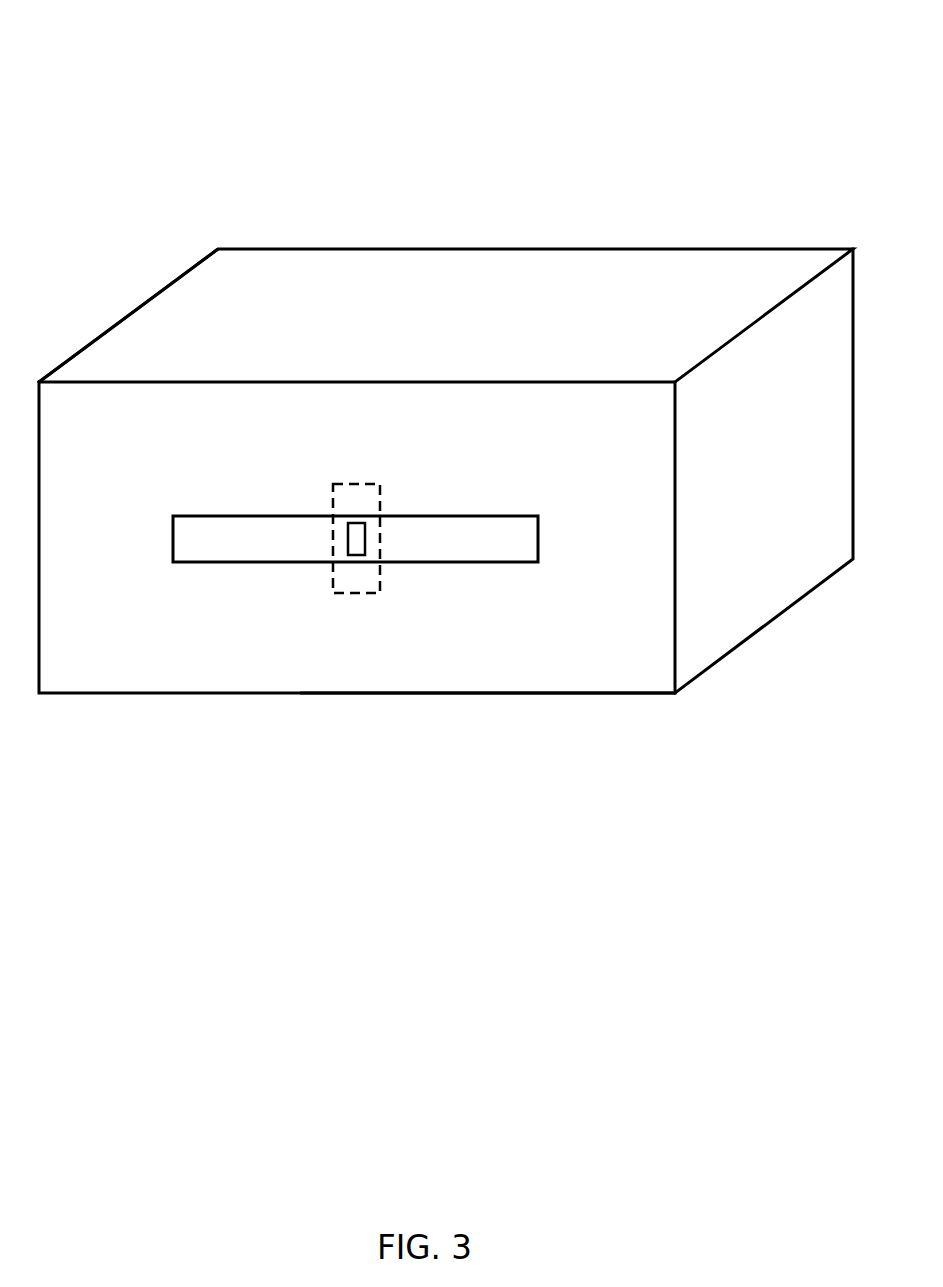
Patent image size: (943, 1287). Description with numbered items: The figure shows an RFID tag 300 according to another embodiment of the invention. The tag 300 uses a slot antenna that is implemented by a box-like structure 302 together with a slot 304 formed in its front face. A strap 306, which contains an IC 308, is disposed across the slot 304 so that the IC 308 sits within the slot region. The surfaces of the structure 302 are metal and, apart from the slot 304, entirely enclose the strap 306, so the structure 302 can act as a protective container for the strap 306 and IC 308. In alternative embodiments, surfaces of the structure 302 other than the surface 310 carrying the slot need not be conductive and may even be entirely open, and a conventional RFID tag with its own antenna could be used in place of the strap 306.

The tag 300 is at (130, 72).
The structure 302 is at (677, 247).
The slot 304 is at (495, 515).
The strap 306 is at (370, 597).
The IC 308 is at (347, 534).
The surface 310 is at (582, 672).